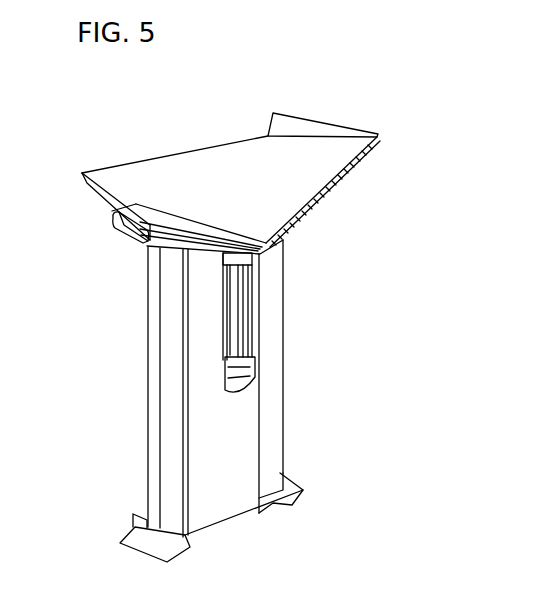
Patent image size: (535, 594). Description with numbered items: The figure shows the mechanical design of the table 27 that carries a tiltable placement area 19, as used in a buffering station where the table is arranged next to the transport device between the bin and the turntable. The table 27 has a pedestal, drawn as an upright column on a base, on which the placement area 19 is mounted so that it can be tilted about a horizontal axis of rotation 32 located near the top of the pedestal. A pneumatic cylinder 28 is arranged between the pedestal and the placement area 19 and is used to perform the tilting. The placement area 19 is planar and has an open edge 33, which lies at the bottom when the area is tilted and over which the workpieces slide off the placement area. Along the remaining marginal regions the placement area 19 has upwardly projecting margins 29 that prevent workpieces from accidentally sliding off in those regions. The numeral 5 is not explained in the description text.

The mounting bracket 5 is at (108, 247).
The work surface 19 is at (213, 192).
The pedestal column 27 is at (268, 395).
The linear actuator 28 is at (243, 317).
The rear ledge 29 is at (340, 133).
The front lip 32 is at (49, 274).
The sloped top panel 33 is at (197, 150).